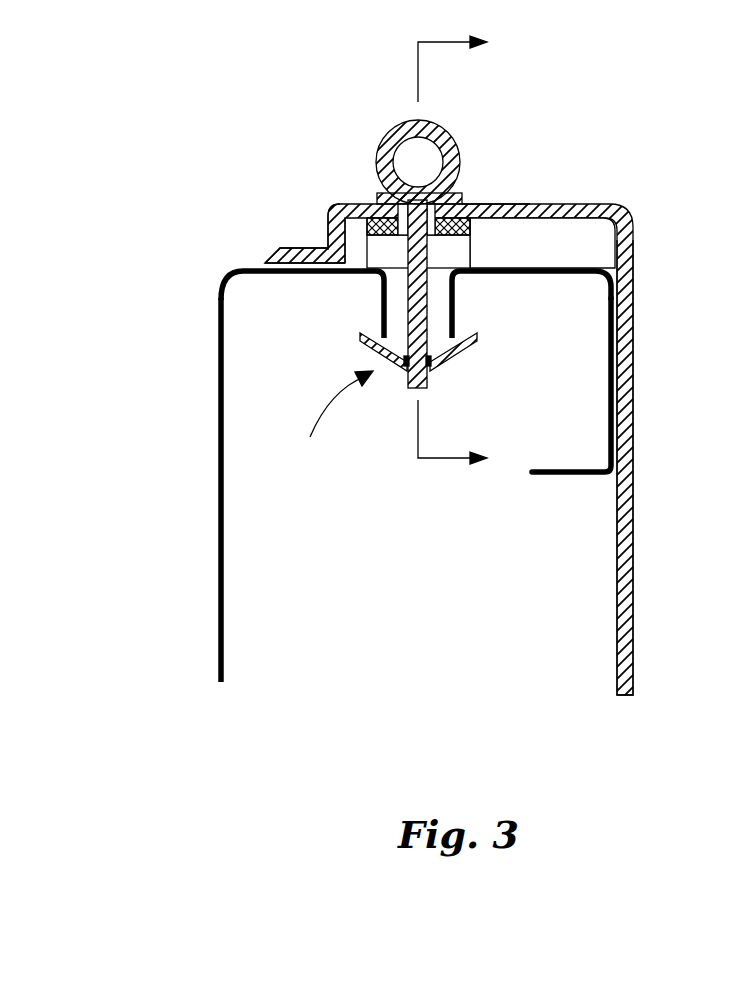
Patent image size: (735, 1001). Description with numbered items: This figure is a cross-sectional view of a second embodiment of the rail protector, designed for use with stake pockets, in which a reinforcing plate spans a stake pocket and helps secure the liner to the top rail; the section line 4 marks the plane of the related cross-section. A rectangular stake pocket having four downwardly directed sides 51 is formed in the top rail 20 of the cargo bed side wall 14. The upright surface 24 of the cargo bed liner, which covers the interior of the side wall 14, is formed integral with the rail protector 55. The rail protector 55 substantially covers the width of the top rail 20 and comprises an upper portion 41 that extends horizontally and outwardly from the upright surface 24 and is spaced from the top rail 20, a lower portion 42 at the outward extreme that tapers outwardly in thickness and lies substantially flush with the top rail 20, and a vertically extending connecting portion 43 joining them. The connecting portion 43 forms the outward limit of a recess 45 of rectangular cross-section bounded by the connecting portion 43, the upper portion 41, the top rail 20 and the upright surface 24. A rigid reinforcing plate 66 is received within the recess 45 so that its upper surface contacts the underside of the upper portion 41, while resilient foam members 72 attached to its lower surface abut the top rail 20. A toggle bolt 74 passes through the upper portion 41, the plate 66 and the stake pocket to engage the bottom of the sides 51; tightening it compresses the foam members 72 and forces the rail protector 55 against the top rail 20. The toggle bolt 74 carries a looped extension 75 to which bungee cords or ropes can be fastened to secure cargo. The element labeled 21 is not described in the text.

The section line 4- 4 is at (452, 251).
The side wall 14 is at (218, 538).
The top rail 20 is at (297, 273).
The can inner wall 21 is at (613, 402).
The upright surface 24 is at (633, 548).
The upper portion 41 is at (588, 204).
The lower portion 42 is at (285, 253).
The connecting portion 43 is at (327, 232).
The recess 45 is at (565, 247).
The sides 51 is at (385, 302).
The rail protector 55 is at (549, 158).
The reinforcing plate 66 is at (490, 204).
The foam member 72 is at (390, 253).
The toggle bolt 74 is at (333, 420).
The looped extension 75 is at (452, 130).